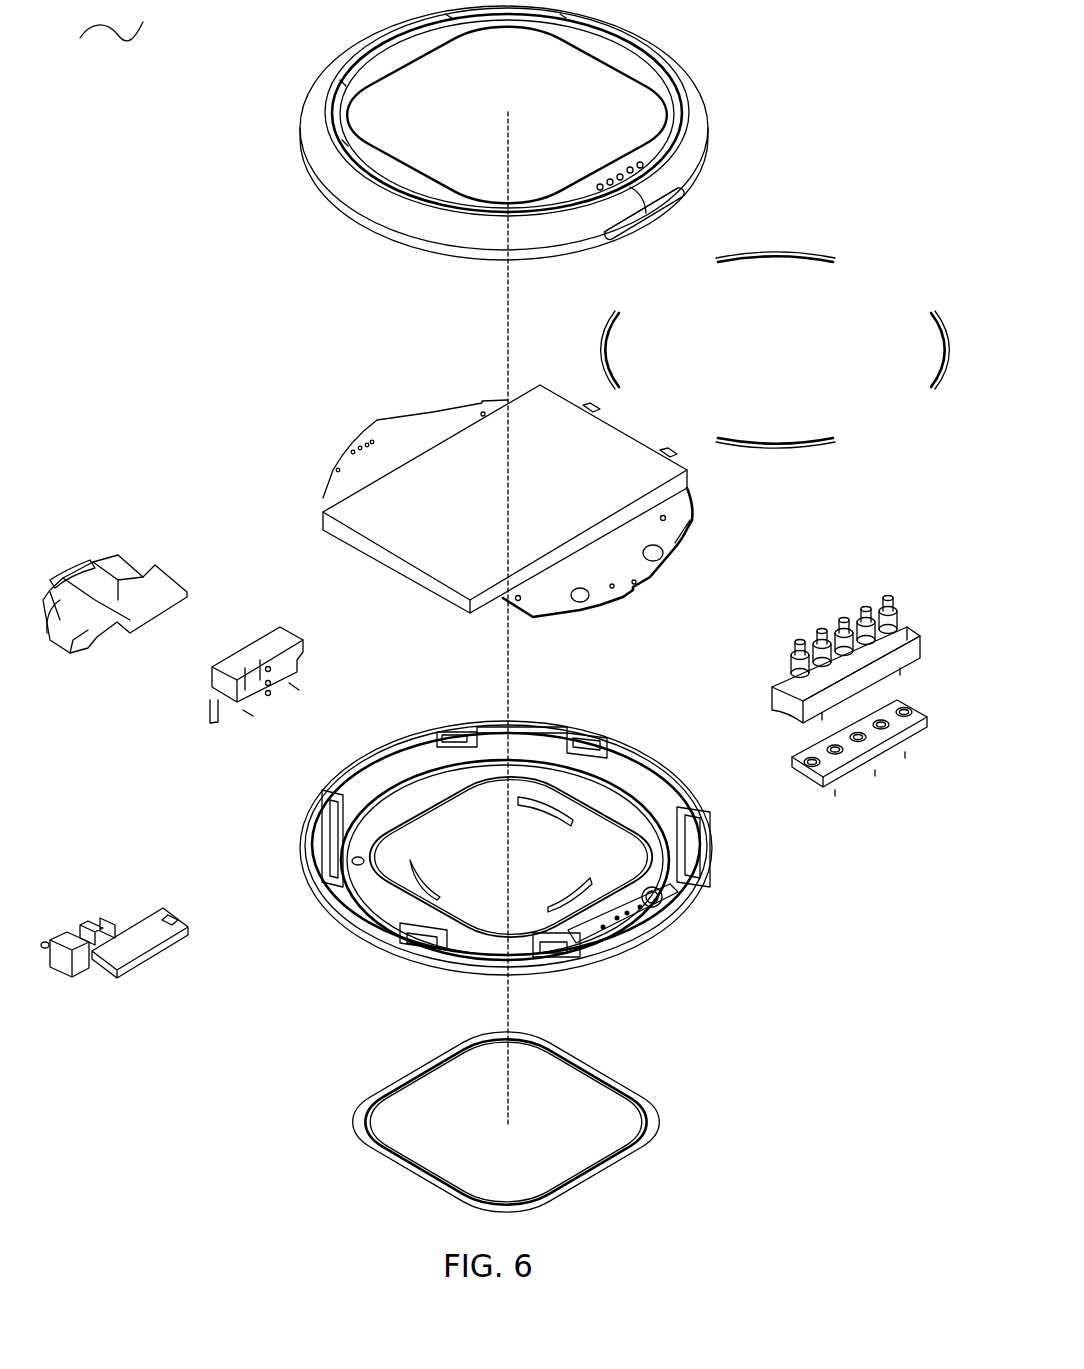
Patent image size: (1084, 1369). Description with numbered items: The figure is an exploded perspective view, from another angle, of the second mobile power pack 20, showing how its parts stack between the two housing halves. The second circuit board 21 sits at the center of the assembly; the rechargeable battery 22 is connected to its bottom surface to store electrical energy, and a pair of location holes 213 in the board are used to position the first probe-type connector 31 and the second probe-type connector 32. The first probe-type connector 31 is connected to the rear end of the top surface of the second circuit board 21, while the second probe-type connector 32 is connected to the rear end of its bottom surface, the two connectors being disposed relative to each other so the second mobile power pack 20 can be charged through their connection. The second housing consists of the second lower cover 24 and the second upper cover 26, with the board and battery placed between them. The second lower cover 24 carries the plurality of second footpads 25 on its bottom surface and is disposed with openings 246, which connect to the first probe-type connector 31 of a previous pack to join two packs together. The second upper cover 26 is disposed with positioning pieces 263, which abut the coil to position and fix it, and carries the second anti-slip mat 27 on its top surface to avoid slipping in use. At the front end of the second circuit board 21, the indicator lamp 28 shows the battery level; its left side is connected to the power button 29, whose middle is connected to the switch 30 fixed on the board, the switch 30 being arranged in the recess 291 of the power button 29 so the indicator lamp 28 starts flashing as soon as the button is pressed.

The second mobile power pack 20 is at (111, 20).
The second circuit board 21 is at (565, 530).
The location holes 213 is at (653, 558).
The rechargeable battery 22 is at (457, 550).
The second lower cover 24 is at (581, 133).
The openings 246 is at (657, 167).
The second footpads 25 is at (777, 450).
The second upper cover 26 is at (555, 848).
The positioning pieces 263 is at (658, 906).
The second anti-slip mat 27 is at (643, 1140).
The indicator lamp 28 is at (78, 927).
The power button 29 is at (115, 590).
The recess 291 is at (118, 603).
The switch 30 is at (233, 713).
The first probe-type connector 31 is at (860, 753).
The second probe-type connector 32 is at (878, 667).